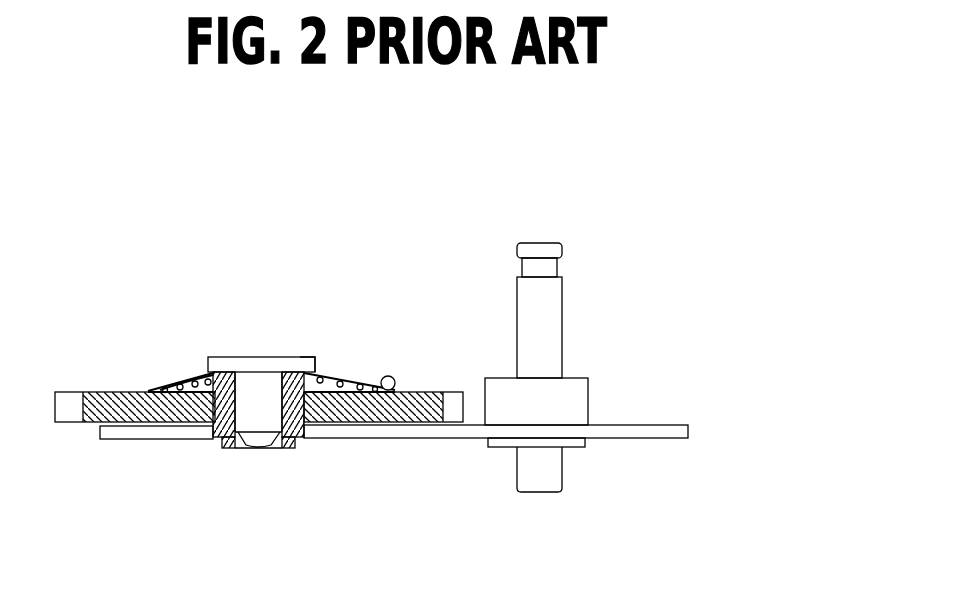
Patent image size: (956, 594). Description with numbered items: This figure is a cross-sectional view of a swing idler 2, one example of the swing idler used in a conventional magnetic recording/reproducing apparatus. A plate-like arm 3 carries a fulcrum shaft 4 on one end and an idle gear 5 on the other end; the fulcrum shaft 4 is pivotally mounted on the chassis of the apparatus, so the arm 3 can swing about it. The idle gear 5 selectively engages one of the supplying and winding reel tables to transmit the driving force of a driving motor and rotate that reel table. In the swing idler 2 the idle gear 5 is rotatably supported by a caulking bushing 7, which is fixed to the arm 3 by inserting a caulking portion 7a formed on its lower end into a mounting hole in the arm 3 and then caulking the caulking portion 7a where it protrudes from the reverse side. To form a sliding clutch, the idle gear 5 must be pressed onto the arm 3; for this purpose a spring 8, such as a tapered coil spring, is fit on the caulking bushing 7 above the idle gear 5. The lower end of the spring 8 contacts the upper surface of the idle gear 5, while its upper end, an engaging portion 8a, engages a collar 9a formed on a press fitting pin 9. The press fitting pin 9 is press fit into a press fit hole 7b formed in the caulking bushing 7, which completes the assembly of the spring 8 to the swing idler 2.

The swing idler 2 is at (300, 195).
The arm 3 is at (637, 445).
The fulcrum shaft 4 is at (566, 312).
The idle gear 5 is at (97, 388).
The caulking bushing 7 is at (225, 452).
The caulking portion 7a is at (297, 448).
The press fit hole 7b is at (236, 400).
The spring 8 is at (168, 382).
The engaging portion 8a is at (175, 384).
The press fitting pin 9 is at (286, 354).
The collar 9a is at (305, 357).